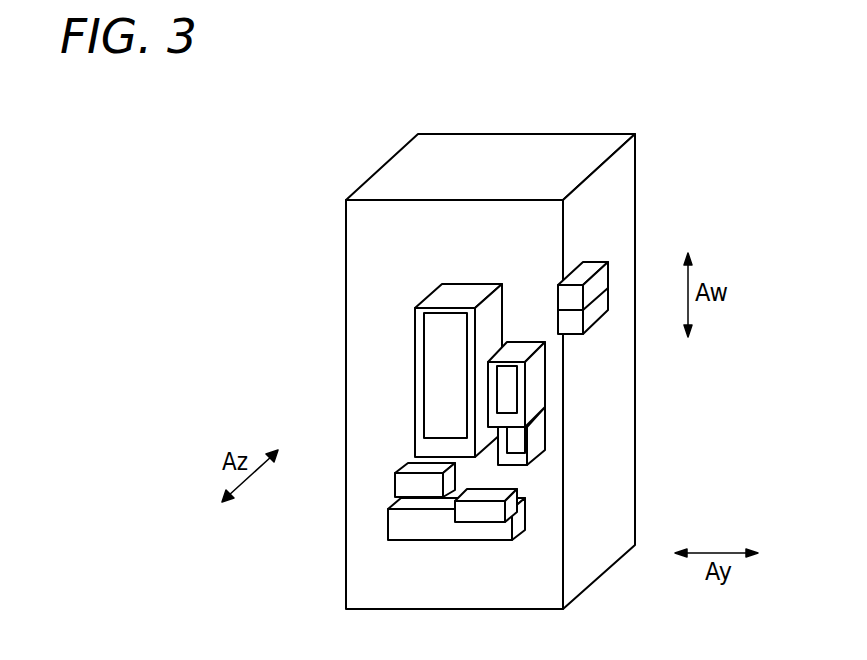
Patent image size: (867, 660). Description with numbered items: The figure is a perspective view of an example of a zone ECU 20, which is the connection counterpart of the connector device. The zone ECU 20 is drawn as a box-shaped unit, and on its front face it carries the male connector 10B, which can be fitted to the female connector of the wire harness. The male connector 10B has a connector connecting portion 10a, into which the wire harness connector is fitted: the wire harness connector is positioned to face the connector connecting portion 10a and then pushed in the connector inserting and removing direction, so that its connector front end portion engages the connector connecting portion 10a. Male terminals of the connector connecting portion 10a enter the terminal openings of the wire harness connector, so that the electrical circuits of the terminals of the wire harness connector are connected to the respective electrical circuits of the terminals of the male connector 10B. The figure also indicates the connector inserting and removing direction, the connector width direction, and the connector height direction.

The zone ECU 20 is at (346, 287).
The connector connecting portion 10a is at (505, 385).
The male connector 10B is at (535, 382).